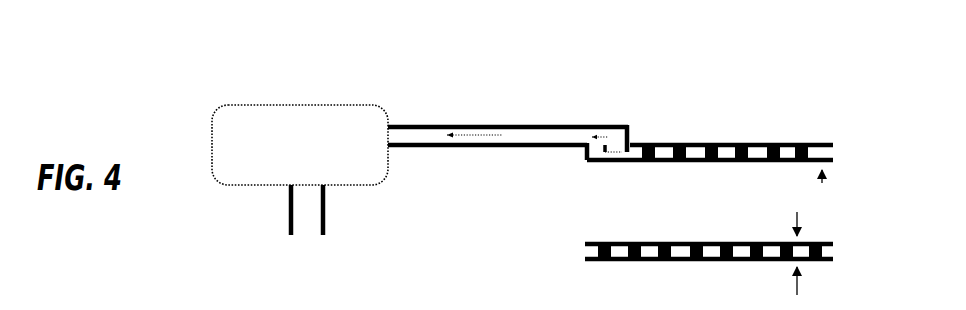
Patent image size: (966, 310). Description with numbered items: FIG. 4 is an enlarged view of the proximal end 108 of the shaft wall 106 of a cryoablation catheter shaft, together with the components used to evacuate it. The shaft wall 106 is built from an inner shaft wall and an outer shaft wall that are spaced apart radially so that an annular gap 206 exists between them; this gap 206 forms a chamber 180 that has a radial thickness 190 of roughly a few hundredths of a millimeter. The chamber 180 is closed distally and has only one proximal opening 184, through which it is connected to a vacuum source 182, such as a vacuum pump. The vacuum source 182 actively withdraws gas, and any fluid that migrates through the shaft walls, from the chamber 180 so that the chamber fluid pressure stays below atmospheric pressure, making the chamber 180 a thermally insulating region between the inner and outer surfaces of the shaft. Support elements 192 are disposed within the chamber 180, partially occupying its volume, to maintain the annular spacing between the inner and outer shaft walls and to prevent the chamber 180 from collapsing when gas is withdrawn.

The shaft wall 106 is at (663, 235).
The proximal end 108 is at (665, 122).
The chamber 180 is at (828, 148).
The vacuum source 182 is at (212, 154).
The proximal opening 184 is at (632, 147).
The radial thickness 190 is at (820, 134).
The support elements 192 is at (586, 245).
The gap 206 is at (797, 290).